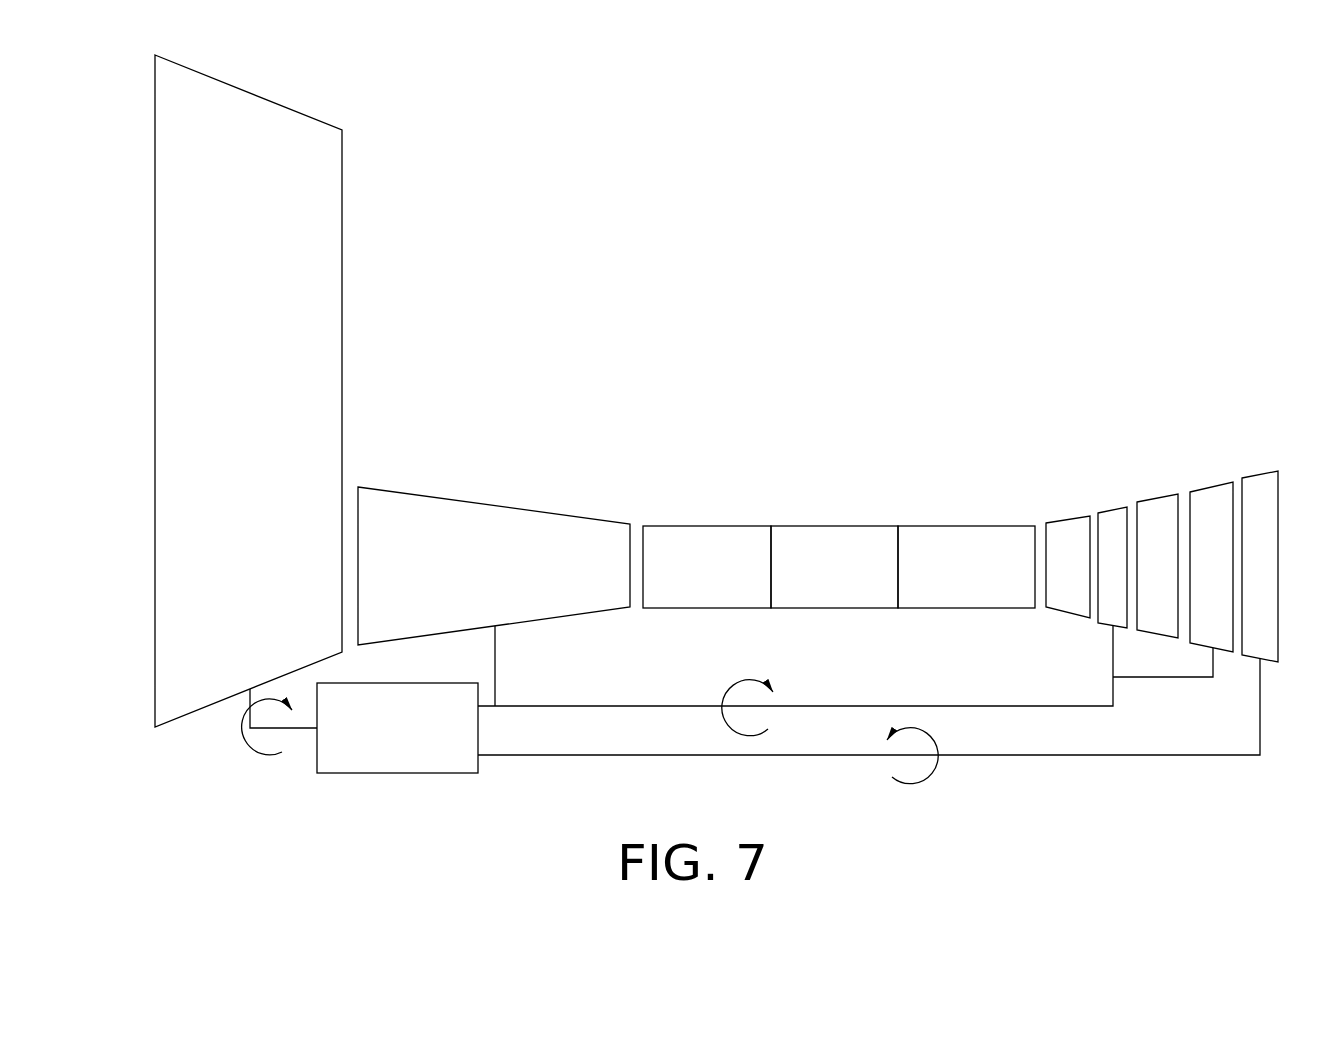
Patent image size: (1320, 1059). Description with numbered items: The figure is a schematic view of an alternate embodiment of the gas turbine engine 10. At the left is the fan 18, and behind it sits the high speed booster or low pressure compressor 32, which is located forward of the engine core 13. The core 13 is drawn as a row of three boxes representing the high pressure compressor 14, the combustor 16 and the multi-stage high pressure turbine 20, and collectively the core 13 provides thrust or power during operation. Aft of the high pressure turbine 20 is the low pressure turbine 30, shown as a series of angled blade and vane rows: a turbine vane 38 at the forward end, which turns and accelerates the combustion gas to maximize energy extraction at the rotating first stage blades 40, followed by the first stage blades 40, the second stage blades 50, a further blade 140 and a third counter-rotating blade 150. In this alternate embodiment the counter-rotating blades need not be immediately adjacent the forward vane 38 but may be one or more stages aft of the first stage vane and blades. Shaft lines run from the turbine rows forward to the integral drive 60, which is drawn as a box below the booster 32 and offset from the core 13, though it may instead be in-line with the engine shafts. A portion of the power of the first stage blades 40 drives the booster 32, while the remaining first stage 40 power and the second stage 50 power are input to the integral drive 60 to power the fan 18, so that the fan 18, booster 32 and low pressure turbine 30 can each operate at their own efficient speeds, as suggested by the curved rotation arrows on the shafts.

The gas turbine engine 10 is at (965, 288).
The core 13 is at (839, 529).
The high pressure compressor 14 is at (693, 579).
The combustor 16 is at (820, 579).
The fan 18 is at (300, 339).
The high pressure turbine 20 is at (966, 567).
The low pressure turbine 30 is at (1091, 428).
The booster 32 is at (505, 489).
The turbine vane 38 is at (1056, 501).
The first stage blades 40 is at (1101, 495).
The second stage blades 50 is at (1151, 486).
The integral drive 60 is at (445, 795).
The second blade 140 is at (1209, 478).
The third counter-rotating blade 150 is at (1261, 468).